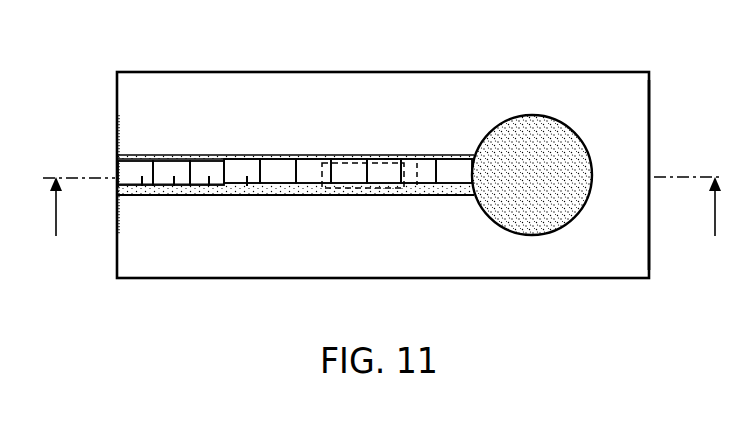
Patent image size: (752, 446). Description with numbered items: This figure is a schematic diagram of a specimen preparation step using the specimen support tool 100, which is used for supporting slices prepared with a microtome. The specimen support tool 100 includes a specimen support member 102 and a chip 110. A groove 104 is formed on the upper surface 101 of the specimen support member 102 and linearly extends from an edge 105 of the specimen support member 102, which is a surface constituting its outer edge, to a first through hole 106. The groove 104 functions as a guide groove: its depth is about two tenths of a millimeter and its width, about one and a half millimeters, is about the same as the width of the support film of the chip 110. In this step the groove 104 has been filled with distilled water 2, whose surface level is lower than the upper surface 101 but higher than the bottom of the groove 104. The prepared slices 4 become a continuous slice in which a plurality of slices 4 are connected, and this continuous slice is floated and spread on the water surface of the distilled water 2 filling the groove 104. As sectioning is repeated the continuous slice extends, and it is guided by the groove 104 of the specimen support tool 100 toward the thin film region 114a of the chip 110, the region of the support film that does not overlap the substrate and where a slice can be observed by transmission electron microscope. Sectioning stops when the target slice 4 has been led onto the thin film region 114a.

The specimen support tool 100 is at (633, 35).
The upper surface 101 is at (230, 84).
The specimen support member 102 is at (628, 113).
The groove 104 is at (168, 160).
The distilled water 2 is at (214, 160).
The thin film region 114a is at (345, 172).
The chip 110 is at (390, 148).
The first through hole 106 is at (575, 168).
The edge 105 is at (110, 165).
The slices 4 is at (142, 176).